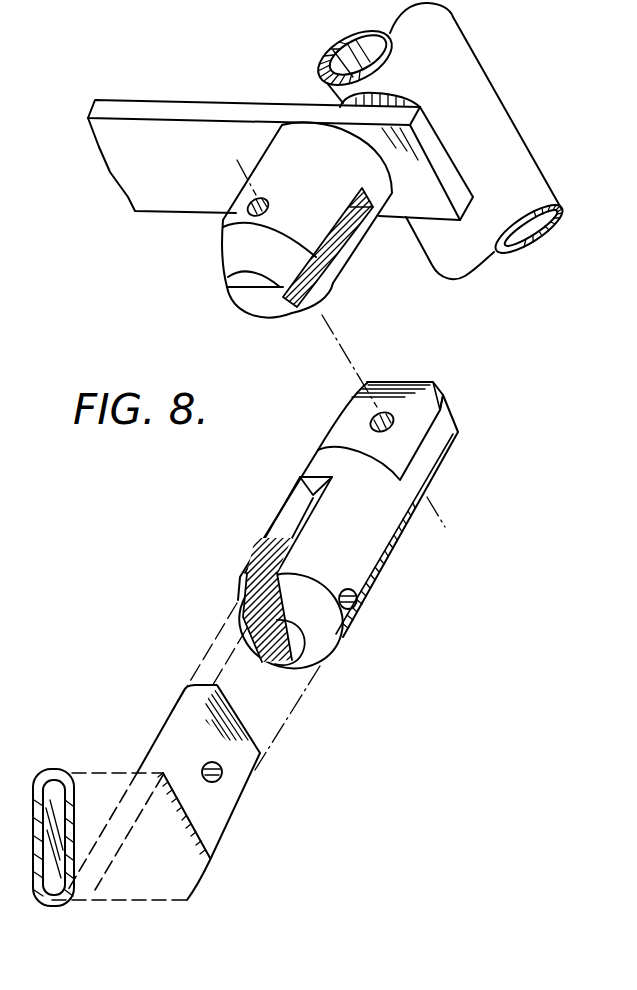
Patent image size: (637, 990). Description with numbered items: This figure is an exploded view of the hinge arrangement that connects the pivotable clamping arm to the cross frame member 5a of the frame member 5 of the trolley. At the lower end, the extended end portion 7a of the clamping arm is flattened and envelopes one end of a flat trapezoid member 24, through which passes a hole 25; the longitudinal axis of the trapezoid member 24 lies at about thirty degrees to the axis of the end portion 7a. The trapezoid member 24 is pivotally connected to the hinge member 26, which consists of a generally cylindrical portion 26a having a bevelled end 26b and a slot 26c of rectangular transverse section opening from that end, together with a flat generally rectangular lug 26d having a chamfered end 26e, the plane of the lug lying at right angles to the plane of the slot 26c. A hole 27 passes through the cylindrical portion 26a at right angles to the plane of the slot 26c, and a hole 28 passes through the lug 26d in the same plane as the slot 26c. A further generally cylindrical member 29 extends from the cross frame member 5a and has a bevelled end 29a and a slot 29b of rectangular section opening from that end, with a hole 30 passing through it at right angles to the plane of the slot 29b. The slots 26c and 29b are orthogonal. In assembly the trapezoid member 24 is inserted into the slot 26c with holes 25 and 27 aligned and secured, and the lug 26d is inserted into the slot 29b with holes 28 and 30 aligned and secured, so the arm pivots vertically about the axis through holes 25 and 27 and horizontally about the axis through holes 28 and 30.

The frame member 5 is at (432, 80).
The cross frame member 5a is at (217, 110).
The cylindrical member 29 is at (282, 140).
The bevelled end 29a is at (233, 252).
The slot 29b is at (253, 295).
The hole 30 is at (249, 204).
The hinge member 26 is at (408, 557).
The cylindrical portion 26a is at (298, 448).
The bevelled end 26b is at (240, 606).
The slot 26c is at (277, 664).
The lug 26d is at (452, 445).
The chamfered end 26e is at (450, 402).
The hole 27 is at (358, 608).
The hole 28 is at (387, 413).
The trapezoid member 24 is at (217, 820).
The hole 25 is at (205, 768).
The extended end portion 7a is at (72, 903).